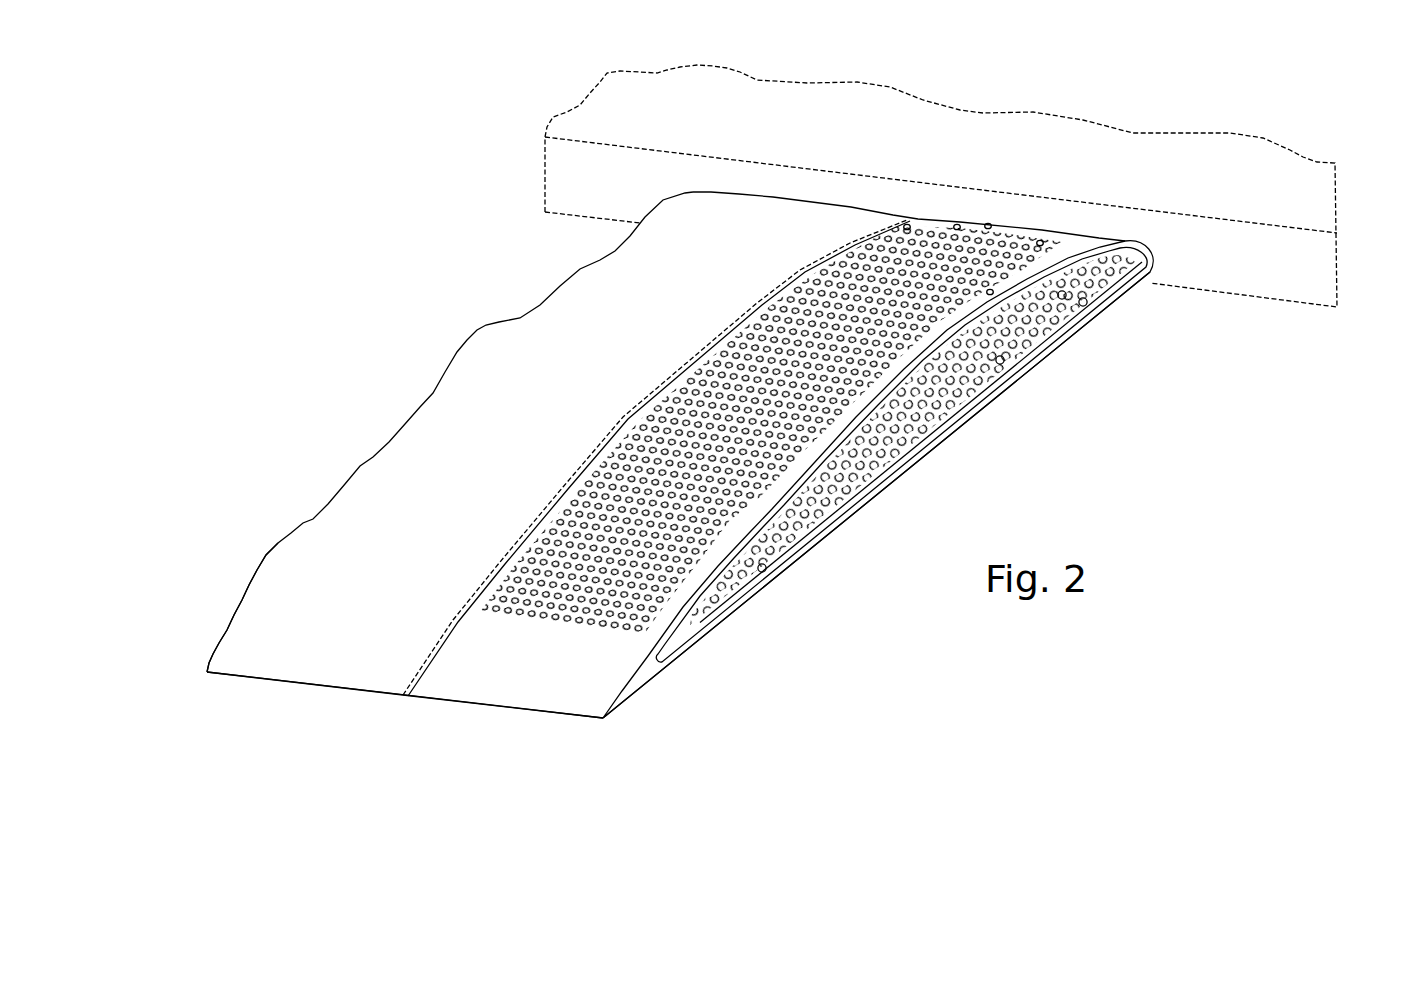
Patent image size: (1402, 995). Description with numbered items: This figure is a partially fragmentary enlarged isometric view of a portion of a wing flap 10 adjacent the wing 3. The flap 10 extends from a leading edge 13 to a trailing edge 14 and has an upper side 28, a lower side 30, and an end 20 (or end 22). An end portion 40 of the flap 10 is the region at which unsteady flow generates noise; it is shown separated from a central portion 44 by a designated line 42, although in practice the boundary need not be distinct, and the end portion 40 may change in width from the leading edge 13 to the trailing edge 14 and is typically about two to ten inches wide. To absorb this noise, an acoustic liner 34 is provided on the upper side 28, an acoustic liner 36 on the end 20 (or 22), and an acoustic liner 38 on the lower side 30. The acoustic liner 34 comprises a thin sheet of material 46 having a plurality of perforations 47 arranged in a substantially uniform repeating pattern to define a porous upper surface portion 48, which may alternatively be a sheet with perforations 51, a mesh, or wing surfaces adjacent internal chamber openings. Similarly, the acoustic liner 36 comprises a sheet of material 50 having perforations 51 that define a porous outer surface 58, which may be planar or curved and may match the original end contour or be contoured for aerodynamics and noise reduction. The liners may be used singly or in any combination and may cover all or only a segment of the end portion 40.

The wing 3 is at (1291, 267).
The flap 10 is at (325, 687).
The leading edge 13 is at (1092, 237).
The trailing edge 14 is at (573, 720).
The end 20 is at (807, 533).
The end 22 is at (672, 670).
The upper side 28 is at (523, 352).
The lower side 30 is at (718, 632).
The acoustic liner 34 is at (1083, 302).
The acoustic liner 36 is at (1000, 362).
The acoustic liner 38 is at (983, 420).
The end portion 40 is at (475, 685).
The line 42 is at (507, 552).
The central portion 44 is at (297, 560).
The sheet of material 46 is at (957, 227).
The perforations 47 is at (907, 227).
The porous upper surface portion 48 is at (990, 226).
The sheet of material 50 is at (990, 292).
The perforations 51 is at (1062, 295).
The porous outer surface 58 is at (760, 570).